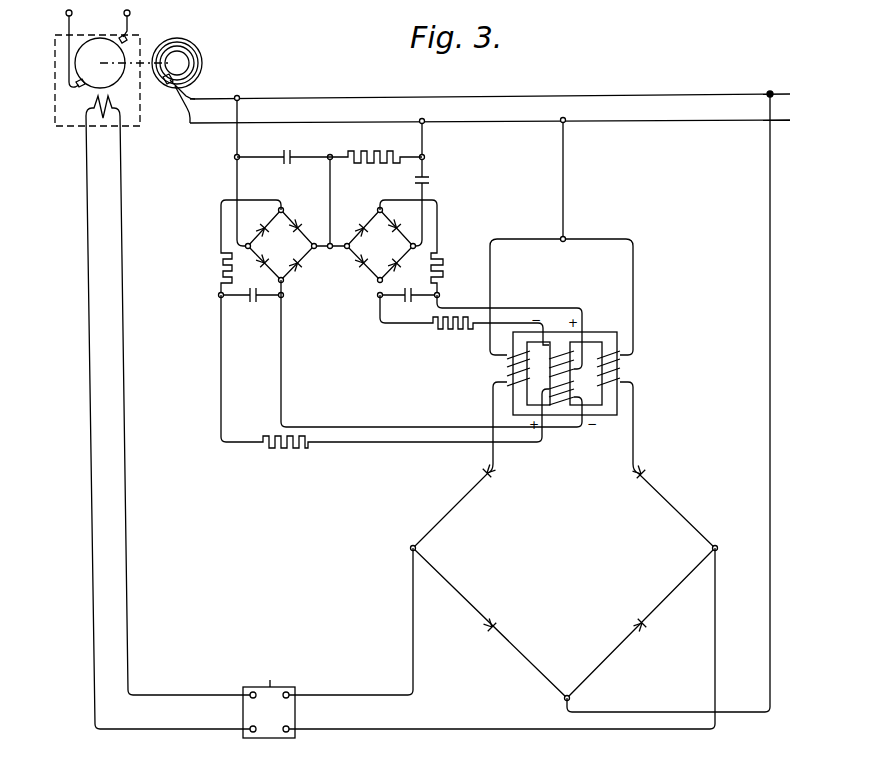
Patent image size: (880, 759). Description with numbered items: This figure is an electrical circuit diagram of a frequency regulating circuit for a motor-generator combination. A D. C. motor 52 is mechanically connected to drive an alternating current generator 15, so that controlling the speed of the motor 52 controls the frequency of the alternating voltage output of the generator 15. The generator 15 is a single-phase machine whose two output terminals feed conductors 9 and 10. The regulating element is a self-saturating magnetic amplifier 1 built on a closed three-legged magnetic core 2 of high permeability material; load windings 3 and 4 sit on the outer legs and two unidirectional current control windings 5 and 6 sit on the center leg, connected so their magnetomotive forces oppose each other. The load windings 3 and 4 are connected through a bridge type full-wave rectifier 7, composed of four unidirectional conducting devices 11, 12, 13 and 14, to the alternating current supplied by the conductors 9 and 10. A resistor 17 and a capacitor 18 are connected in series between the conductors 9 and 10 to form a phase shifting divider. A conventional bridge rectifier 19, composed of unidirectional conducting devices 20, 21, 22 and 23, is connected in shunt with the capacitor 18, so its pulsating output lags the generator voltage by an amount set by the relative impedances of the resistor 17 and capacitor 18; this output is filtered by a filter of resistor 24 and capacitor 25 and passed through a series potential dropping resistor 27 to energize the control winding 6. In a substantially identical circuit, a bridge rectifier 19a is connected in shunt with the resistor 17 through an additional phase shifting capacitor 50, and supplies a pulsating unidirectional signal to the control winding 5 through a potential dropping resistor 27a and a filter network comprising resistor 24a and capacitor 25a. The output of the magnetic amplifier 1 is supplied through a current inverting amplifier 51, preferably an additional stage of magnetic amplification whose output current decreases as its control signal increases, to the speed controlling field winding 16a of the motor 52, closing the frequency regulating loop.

The magnetic amplifier 1 is at (489, 381).
The magnetic core 2 is at (596, 333).
The load winding 3 is at (507, 382).
The load winding 4 is at (622, 381).
The control winding 5 is at (561, 360).
The control winding 6 is at (562, 396).
The full-wave rectifier 7 is at (564, 580).
The conductor 9 is at (784, 122).
The conductor 10 is at (781, 93).
The unidirectional conducting device 11 is at (489, 475).
The unidirectional conducting device 12 is at (636, 473).
The unidirectional conducting device 13 is at (638, 623).
The unidirectional conducting device 14 is at (488, 628).
The alternating current generator 15 is at (191, 47).
The speed controlling field winding 16a is at (106, 105).
The resistor 17 is at (373, 152).
The capacitor 18 is at (287, 150).
The full-wave rectifier 19 is at (284, 247).
The bridge rectifier 19a is at (394, 255).
The unidirectional conducting device 20 is at (299, 227).
The unidirectional conducting device 21 is at (265, 226).
The unidirectional conducting device 22 is at (261, 263).
The unidirectional conducting device 23 is at (303, 264).
The resistor 24 is at (216, 258).
The resistor 24a is at (444, 264).
The capacitor 25 is at (255, 305).
The capacitor 25a is at (409, 305).
The potential dropping resistor 27 is at (283, 449).
The potential dropping resistor 27a is at (451, 336).
The phase shifting capacitor 50 is at (431, 180).
The inverting amplifier 51 is at (243, 736).
The D. C. motor 52 is at (76, 108).